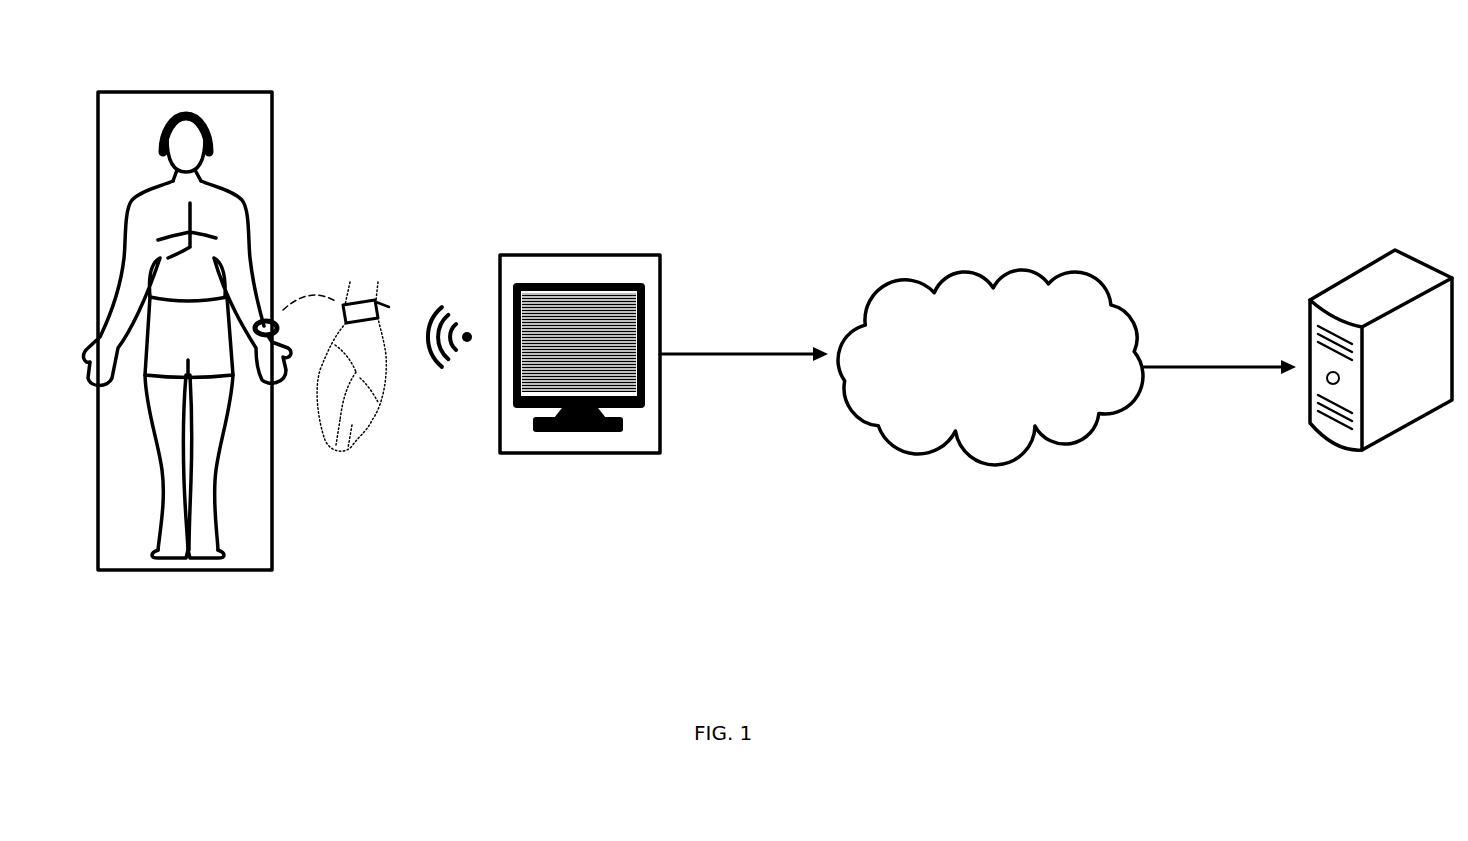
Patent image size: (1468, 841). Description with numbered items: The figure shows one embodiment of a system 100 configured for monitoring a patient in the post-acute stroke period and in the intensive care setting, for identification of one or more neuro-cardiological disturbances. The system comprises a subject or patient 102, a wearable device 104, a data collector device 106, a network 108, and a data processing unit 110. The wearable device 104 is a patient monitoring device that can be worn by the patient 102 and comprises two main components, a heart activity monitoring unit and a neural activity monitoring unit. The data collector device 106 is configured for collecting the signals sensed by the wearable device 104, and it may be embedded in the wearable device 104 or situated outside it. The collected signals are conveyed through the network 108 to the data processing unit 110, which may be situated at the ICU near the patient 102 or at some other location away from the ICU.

The system 100 is at (183, 47).
The subject (patient) 102 is at (247, 197).
The wearable device 104 is at (378, 306).
The data collector device 106 is at (641, 258).
The network 108 is at (1058, 371).
The data processing unit 110 is at (1335, 278).